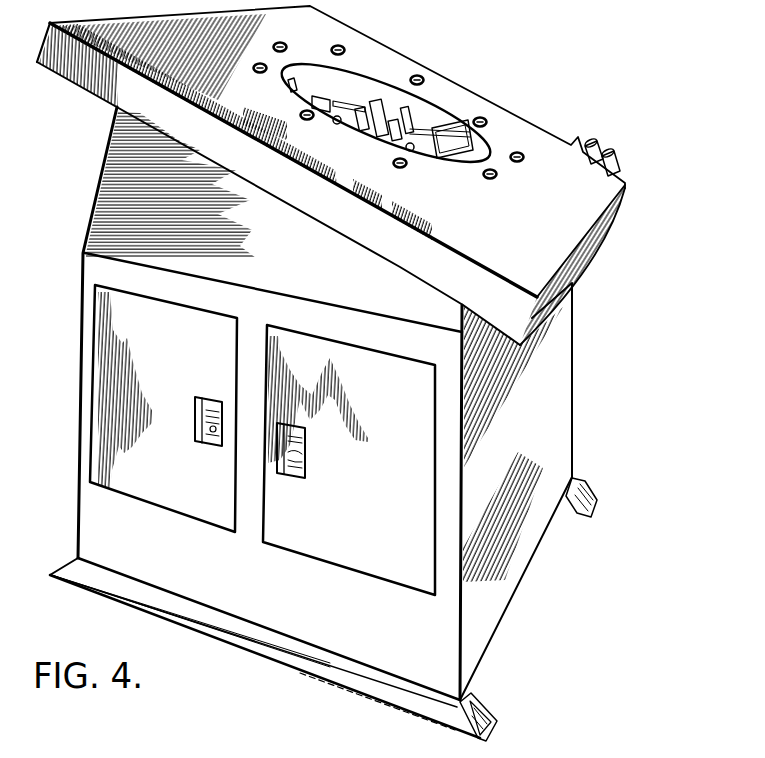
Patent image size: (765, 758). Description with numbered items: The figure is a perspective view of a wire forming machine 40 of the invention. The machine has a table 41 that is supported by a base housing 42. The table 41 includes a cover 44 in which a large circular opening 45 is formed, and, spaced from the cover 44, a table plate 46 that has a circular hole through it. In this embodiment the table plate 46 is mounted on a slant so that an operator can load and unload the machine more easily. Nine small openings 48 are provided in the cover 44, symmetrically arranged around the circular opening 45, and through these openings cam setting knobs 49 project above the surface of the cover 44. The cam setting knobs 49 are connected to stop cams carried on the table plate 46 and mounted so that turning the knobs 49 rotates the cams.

The wire forming machine 40 is at (64, 399).
The table 41 is at (100, 103).
The base housing 42 is at (556, 357).
The cover 44 is at (470, 103).
The circular opening 45 is at (423, 110).
The table plate 46 is at (330, 228).
The small openings 48 is at (300, 120).
The cam setting knobs 49 is at (302, 115).